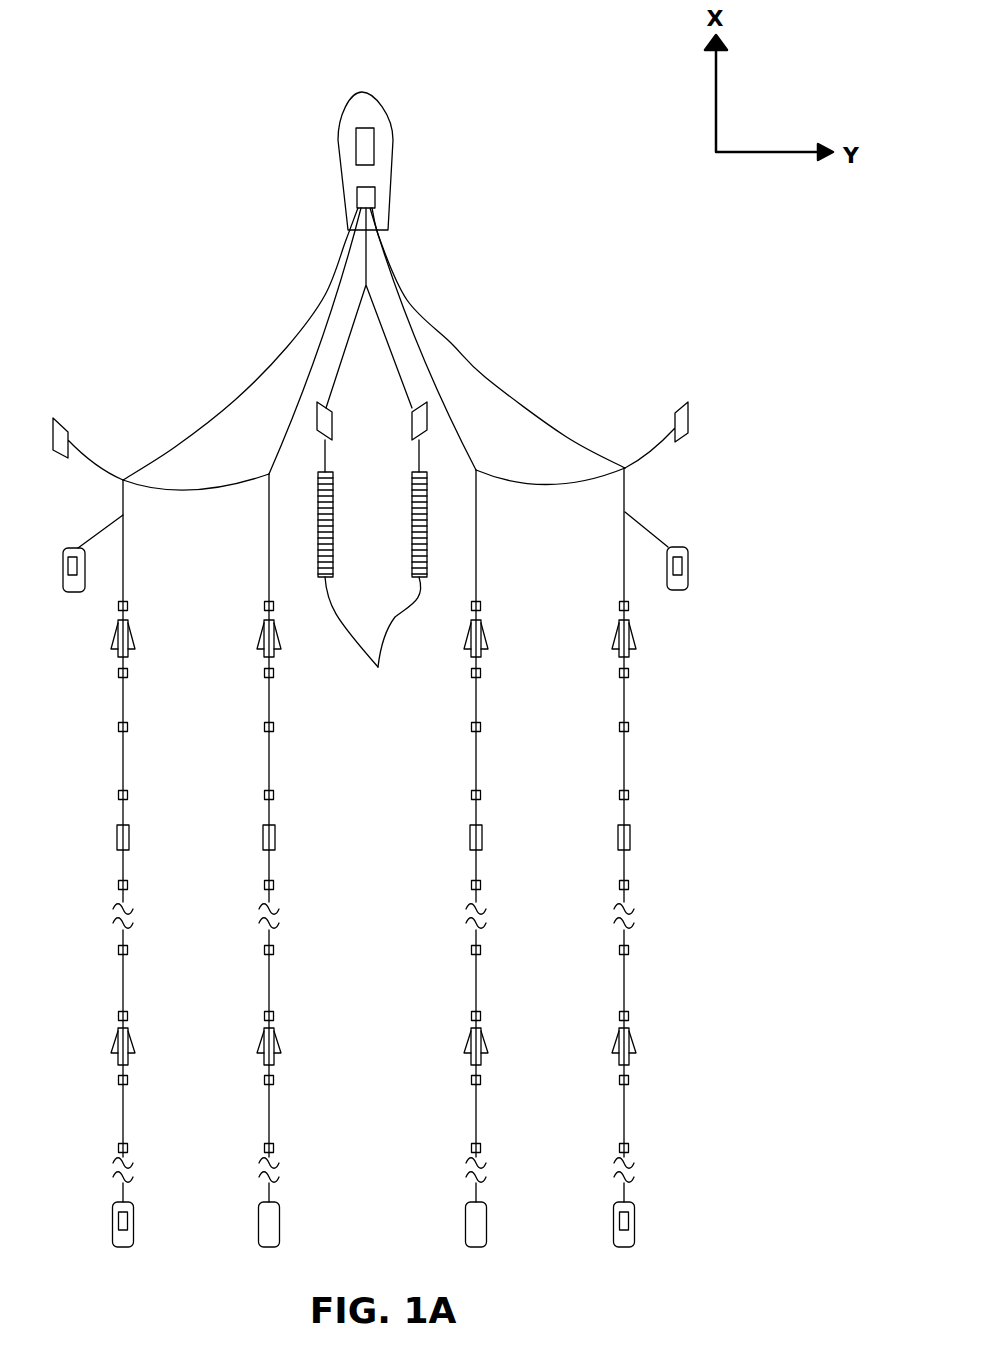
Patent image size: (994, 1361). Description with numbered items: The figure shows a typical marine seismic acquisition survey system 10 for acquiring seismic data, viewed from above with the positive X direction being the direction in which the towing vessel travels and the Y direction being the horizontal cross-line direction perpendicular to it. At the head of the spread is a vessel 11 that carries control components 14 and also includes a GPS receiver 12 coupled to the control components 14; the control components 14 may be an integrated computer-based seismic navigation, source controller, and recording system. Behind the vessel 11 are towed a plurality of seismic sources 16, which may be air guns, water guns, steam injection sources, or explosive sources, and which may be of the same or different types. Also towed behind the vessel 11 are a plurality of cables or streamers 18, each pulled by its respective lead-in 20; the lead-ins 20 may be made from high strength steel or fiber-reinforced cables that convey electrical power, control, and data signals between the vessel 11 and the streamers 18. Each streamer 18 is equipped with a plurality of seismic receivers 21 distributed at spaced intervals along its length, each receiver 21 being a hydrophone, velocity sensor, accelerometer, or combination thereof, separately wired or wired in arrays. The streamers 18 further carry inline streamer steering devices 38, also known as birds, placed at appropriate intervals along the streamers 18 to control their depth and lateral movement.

The marine seismic acquisition survey system 10 is at (539, 42).
The vessel 11 is at (348, 105).
The GPS receiver 12 is at (373, 150).
The control components 14 is at (360, 202).
The seismic sources 16 is at (372, 452).
The streamers 18 is at (123, 770).
The lead-ins 20 is at (287, 347).
The seismic receivers 21 is at (119, 952).
The inline streamer steering devices 38 is at (115, 638).